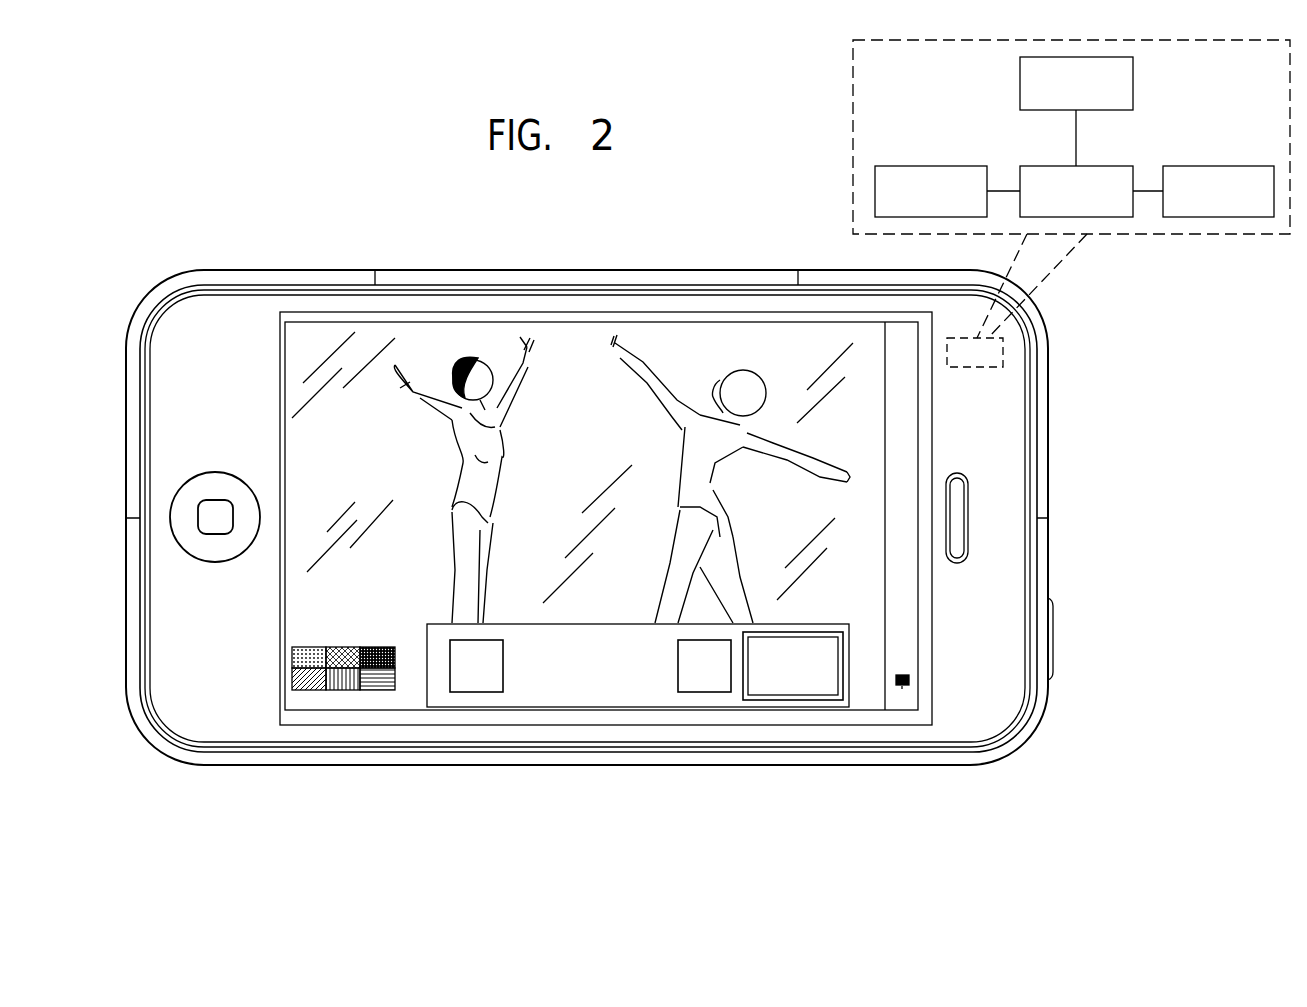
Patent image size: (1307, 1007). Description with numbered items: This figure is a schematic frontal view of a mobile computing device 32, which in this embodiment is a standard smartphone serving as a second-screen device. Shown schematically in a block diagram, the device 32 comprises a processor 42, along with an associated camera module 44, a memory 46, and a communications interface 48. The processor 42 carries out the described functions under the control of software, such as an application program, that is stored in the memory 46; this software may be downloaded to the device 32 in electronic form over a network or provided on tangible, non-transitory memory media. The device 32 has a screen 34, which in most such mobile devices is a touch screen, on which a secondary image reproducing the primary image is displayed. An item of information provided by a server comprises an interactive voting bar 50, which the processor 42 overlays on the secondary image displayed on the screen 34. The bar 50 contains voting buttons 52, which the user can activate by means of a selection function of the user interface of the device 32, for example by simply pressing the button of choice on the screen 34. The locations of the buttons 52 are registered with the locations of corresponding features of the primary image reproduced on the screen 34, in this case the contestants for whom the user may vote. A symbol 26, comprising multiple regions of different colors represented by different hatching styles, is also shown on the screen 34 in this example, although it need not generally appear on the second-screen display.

The symbol 26 is at (292, 672).
The mobile computing device 32 is at (310, 268).
The screen 34 is at (568, 330).
The processor 42 is at (1047, 166).
The camera module 44 is at (920, 166).
The memory 46 is at (1223, 166).
The communications interface 48 is at (1020, 80).
The interactive voting bar 50 is at (795, 700).
The voting buttons 52 is at (478, 692).